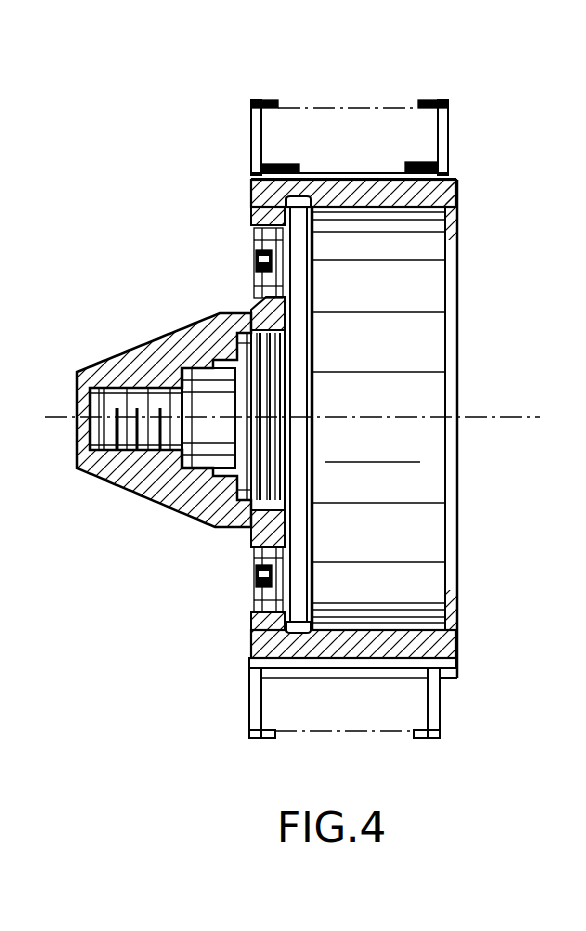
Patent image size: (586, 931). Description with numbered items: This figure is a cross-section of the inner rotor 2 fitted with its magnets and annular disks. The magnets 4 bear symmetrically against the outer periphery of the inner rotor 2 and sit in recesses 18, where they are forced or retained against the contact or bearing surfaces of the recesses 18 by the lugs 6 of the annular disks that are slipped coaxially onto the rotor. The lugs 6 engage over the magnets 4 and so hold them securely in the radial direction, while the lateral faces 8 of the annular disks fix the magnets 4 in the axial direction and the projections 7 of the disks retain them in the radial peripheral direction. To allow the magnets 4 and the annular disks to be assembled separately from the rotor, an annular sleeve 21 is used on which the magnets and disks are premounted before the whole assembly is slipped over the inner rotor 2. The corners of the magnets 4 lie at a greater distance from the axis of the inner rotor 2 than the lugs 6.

The inner rotor 2 is at (252, 207).
The magnets 4 is at (300, 128).
The lugs 6 is at (262, 100).
The projections 7 is at (407, 165).
The lateral faces 8 is at (447, 117).
The recesses 18 is at (348, 173).
The annular sleeve 21 is at (452, 190).